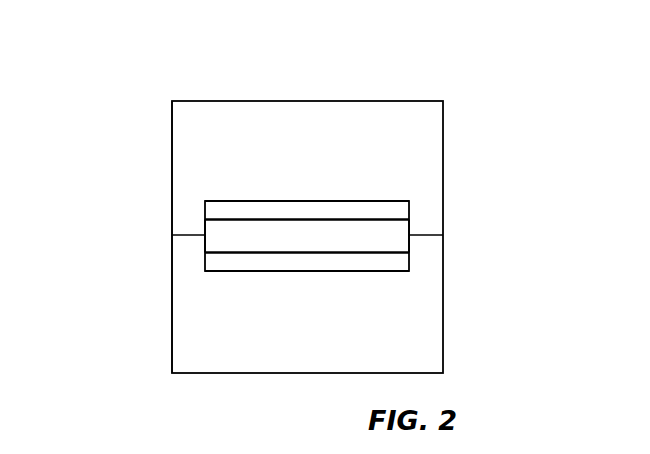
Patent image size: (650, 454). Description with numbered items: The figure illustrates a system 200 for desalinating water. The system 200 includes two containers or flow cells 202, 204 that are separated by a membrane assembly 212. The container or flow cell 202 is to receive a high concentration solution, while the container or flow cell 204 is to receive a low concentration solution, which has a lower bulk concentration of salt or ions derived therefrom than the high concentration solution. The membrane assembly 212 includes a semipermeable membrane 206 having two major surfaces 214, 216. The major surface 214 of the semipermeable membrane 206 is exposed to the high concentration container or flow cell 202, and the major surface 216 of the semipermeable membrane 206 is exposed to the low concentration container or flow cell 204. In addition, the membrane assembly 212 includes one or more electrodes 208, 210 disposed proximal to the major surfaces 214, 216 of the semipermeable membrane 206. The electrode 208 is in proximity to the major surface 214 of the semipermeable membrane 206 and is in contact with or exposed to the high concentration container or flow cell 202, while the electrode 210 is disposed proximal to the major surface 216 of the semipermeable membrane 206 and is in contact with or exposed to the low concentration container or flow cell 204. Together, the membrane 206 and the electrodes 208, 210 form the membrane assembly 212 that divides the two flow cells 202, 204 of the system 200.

The system 200 is at (313, 81).
The container or flow cell 202 is at (170, 141).
The container or flow cell 204 is at (170, 346).
The semipermeable membrane 206 is at (222, 236).
The electrode 208 is at (247, 211).
The electrode 210 is at (247, 262).
The membrane assembly 212 is at (457, 202).
The major surface 214 is at (318, 220).
The major surface 216 is at (318, 253).